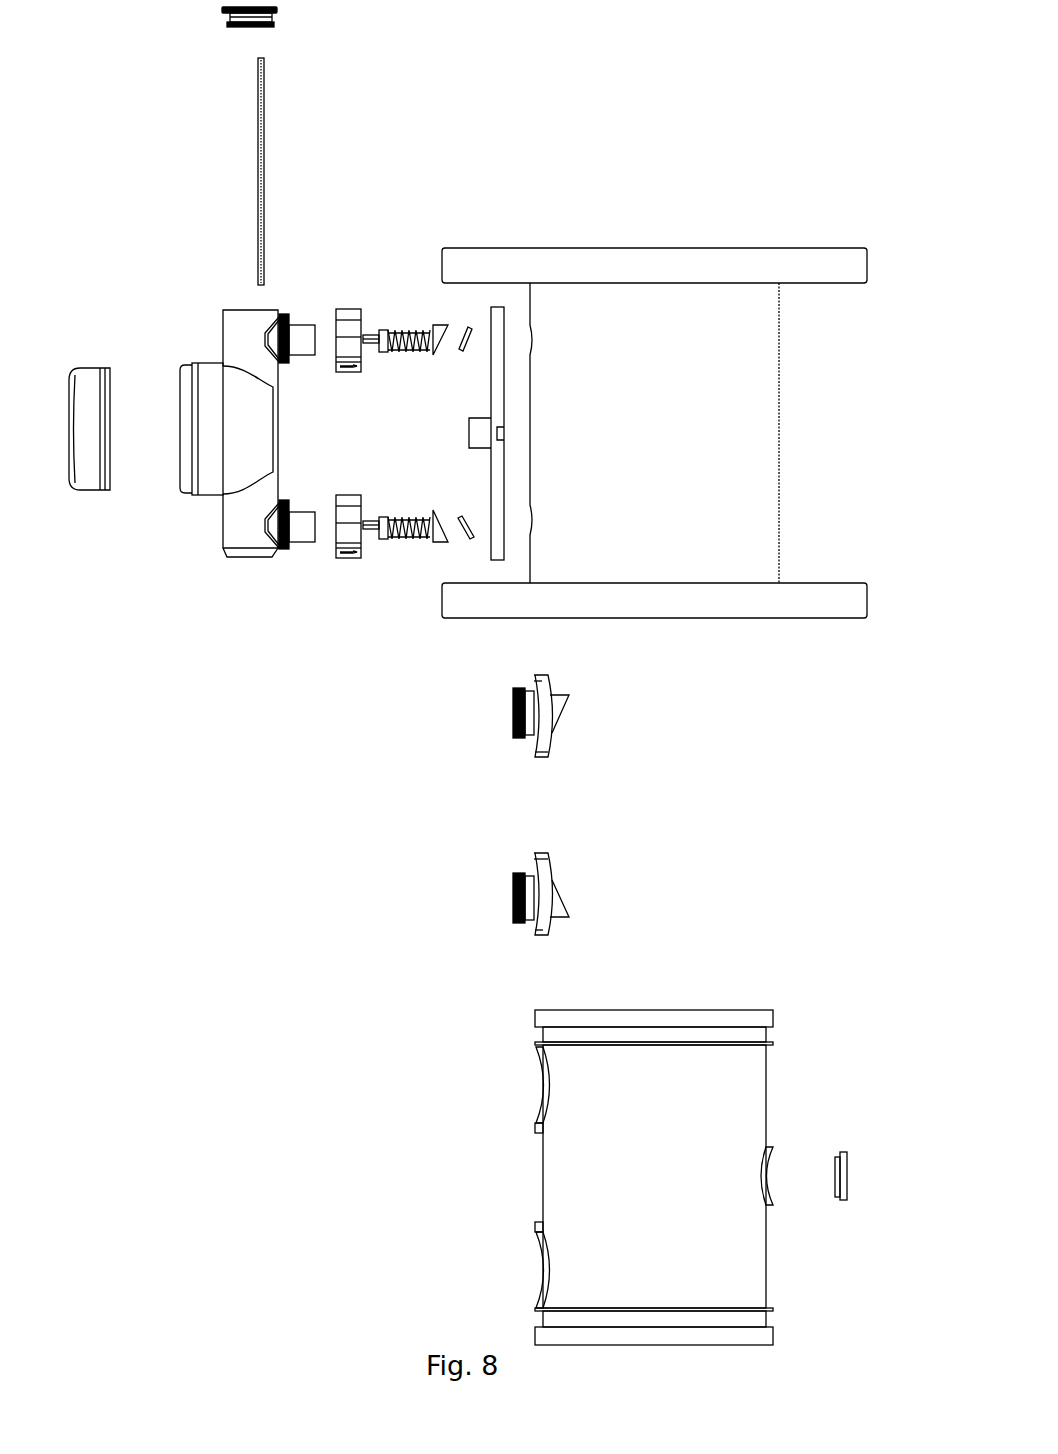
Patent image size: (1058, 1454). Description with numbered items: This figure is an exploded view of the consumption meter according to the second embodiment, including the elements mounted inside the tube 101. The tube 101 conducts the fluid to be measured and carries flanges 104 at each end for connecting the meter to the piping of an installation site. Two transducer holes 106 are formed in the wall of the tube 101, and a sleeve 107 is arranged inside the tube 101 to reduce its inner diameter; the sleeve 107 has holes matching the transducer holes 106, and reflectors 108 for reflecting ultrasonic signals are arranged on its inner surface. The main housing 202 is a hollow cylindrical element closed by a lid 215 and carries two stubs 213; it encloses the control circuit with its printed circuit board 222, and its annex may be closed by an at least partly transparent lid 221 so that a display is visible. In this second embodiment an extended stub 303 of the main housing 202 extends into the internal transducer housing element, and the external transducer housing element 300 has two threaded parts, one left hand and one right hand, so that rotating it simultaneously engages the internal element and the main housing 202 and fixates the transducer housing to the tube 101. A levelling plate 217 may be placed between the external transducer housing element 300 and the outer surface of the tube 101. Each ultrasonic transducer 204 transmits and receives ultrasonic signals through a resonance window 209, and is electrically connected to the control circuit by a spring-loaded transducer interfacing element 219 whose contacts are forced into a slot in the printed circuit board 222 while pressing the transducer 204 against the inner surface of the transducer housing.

The tube 101 is at (662, 345).
The flanges 104 is at (683, 267).
The transducer hole 106 is at (532, 347).
The sleeve 107 is at (722, 1092).
The reflectors 108 is at (842, 1177).
The main housing 202 is at (245, 340).
The ultrasonic transducer 204 is at (471, 327).
The resonance window 209 is at (572, 722).
The stubs 213 is at (287, 318).
The lid 215 is at (222, 20).
The levelling plate 217 is at (497, 502).
The transducer interfacing element 219 is at (405, 322).
The lid of the annex 221 is at (88, 392).
The printed circuit board 222 is at (248, 135).
The external transducer housing element 300 is at (347, 323).
The extended stub 303 is at (303, 337).